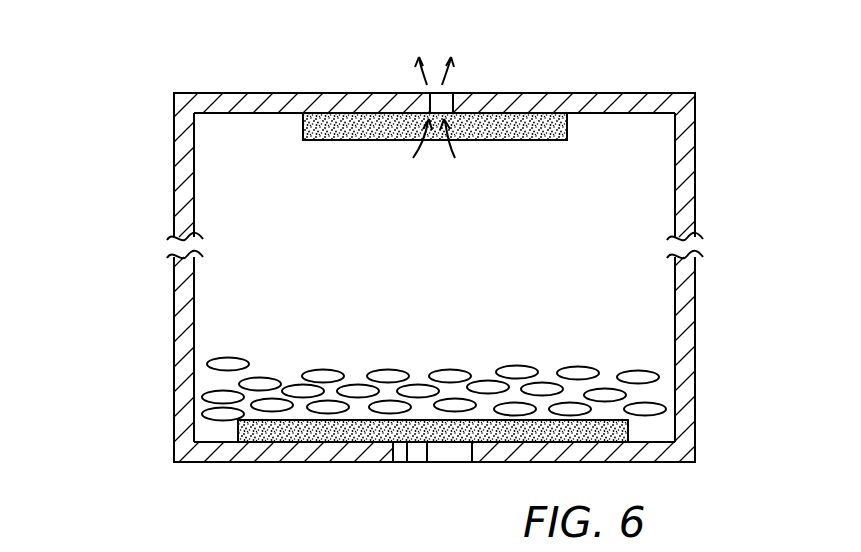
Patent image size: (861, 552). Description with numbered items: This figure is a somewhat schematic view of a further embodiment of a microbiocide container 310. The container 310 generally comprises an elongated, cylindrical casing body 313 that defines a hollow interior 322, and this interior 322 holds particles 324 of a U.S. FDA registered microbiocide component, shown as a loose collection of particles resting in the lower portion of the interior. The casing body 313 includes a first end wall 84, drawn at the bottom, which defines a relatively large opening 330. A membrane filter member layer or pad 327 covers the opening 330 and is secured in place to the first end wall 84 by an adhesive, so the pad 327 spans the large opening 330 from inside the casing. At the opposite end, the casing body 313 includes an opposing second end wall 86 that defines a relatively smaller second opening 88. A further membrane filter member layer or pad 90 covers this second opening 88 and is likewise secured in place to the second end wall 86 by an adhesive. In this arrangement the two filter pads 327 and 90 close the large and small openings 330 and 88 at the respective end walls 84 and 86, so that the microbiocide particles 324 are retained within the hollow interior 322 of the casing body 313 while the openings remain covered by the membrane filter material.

The container 310 is at (153, 210).
The second end wall 86 is at (255, 100).
The first end wall 84 is at (247, 453).
The casing body 313 is at (183, 338).
The hollow interior 322 is at (205, 160).
The second opening 88 is at (418, 110).
The membrane filter member layer or pad 90 is at (343, 127).
The membrane filter member layer or pad 327 is at (628, 432).
The opening 330 is at (395, 446).
The particles 324 is at (202, 414).